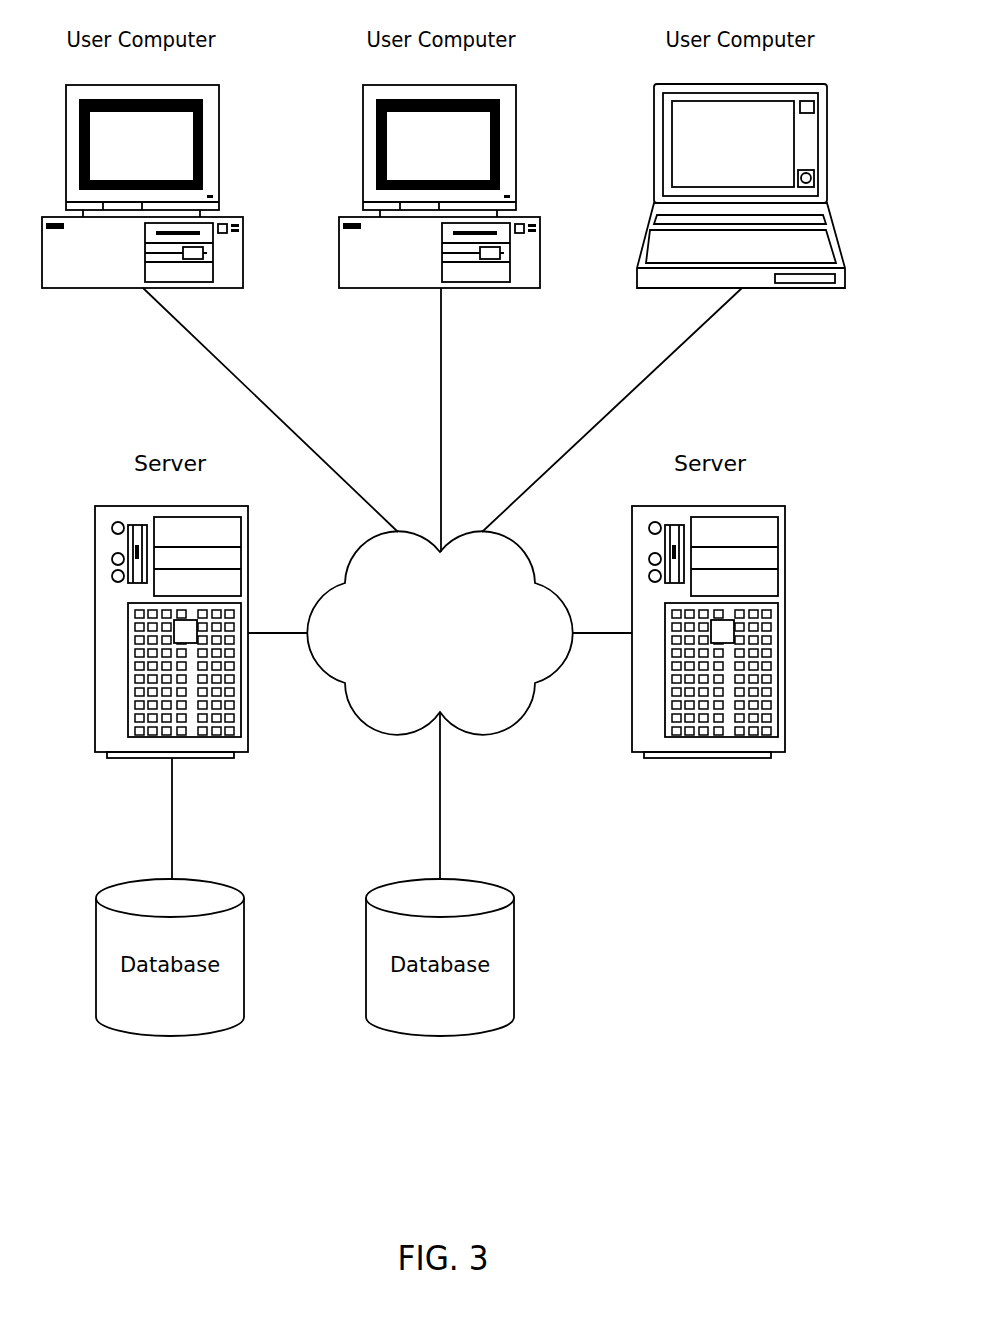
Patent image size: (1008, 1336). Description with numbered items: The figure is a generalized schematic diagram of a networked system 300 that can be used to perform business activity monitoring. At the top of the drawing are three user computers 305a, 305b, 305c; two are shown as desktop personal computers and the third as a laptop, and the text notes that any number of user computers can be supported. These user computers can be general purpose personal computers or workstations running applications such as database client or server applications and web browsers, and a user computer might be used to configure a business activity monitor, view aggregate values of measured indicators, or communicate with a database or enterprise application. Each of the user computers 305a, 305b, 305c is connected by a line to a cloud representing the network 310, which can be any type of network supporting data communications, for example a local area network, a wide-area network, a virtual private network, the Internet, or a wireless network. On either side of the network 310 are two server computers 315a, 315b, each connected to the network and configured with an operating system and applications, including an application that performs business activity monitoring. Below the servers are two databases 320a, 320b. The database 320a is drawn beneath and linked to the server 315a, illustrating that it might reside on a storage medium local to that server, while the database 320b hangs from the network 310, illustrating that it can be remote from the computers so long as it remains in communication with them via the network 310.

The networked system 300 is at (700, 1095).
The user computer 305a is at (243, 237).
The user computer 305b is at (338, 237).
The user computer 305c is at (654, 186).
The network 310 is at (478, 735).
The server computer 315a is at (95, 633).
The server computer 315b is at (785, 633).
The database 320a is at (170, 1036).
The database 320b is at (440, 1036).